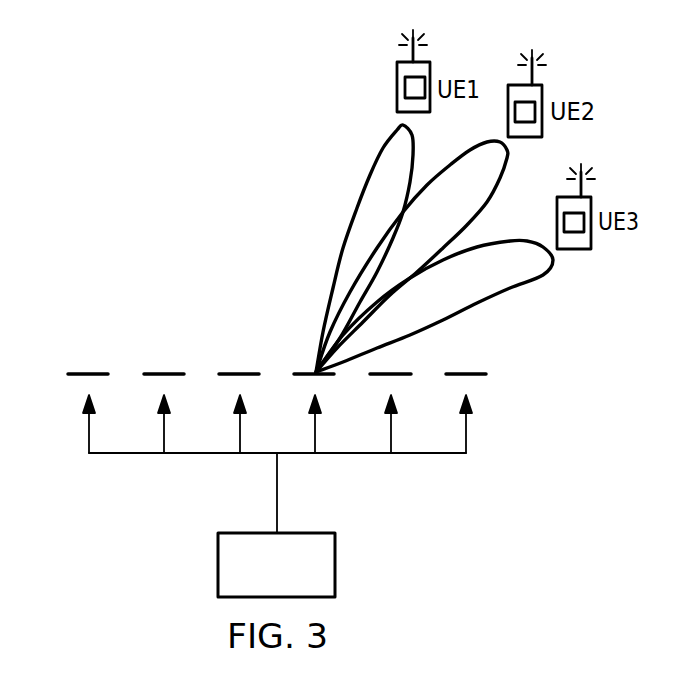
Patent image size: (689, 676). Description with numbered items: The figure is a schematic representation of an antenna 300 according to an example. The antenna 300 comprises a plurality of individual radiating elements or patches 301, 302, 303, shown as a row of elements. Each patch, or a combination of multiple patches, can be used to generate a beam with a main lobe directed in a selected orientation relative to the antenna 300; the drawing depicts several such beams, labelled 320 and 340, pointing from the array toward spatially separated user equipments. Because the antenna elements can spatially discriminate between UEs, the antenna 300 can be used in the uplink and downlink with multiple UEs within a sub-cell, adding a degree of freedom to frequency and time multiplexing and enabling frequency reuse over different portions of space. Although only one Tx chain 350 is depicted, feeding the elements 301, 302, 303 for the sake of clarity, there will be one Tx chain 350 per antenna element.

The antenna 300 is at (338, 420).
The radiating element or patch 301 is at (93, 372).
The radiating element or patch 302 is at (168, 372).
The radiating element or patch 303 is at (242, 372).
The transmit beams 320 is at (351, 193).
The transmit beam 340 is at (538, 278).
The Tx chain 350 is at (337, 562).